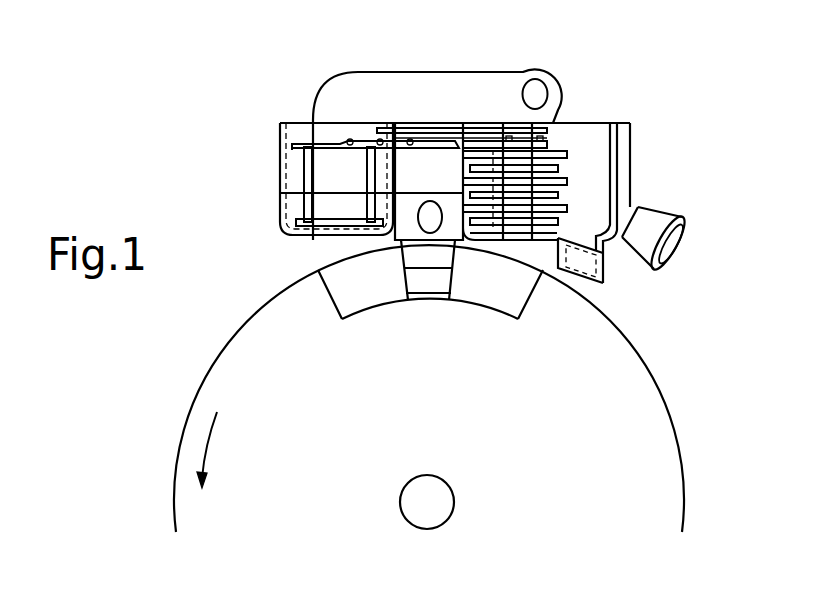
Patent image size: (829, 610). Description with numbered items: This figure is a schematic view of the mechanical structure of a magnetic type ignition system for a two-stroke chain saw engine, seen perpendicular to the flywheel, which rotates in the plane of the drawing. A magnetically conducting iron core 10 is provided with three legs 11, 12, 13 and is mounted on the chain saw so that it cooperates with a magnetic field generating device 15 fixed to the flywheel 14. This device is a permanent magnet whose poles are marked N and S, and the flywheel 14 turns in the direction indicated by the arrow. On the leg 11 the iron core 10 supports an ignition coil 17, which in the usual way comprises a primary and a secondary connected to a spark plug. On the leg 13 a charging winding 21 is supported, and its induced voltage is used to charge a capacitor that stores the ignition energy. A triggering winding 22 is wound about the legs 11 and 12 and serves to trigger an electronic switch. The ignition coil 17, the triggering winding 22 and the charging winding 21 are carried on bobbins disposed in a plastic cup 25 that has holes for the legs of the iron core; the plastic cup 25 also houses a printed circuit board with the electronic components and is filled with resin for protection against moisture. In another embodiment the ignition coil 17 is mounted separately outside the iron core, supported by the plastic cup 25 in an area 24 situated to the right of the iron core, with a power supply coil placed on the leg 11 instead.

The iron core 10 is at (393, 92).
The leg 11 is at (530, 248).
The leg 12 is at (455, 230).
The leg 13 is at (323, 247).
The flywheel 14 is at (658, 398).
The magnetic field generating device 15 is at (367, 322).
The ignition coil 17 is at (567, 160).
The charging winding 21 is at (292, 162).
The triggering winding 22 is at (452, 125).
The area 24 is at (636, 126).
The plastic cup 25 is at (617, 177).